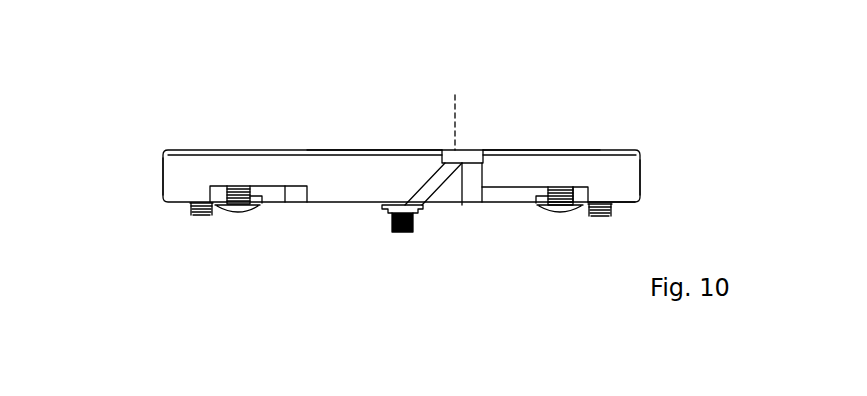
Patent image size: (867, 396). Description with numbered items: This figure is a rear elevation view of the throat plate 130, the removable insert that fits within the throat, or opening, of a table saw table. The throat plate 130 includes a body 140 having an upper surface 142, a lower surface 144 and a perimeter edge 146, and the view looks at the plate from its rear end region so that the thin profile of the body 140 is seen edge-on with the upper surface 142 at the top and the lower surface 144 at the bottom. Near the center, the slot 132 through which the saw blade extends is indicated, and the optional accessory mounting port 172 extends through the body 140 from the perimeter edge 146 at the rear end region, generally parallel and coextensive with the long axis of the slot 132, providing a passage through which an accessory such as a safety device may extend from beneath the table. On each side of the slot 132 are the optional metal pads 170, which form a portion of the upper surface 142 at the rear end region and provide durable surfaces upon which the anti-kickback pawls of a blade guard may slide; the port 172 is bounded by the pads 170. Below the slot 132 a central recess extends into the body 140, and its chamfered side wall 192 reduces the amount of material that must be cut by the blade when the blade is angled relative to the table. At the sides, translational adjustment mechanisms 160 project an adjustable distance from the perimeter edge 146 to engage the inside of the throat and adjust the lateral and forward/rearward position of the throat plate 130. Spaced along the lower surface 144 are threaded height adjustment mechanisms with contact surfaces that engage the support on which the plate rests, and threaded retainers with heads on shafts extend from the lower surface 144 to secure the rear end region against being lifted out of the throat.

The throat plate 130 is at (122, 93).
The slot 132 is at (455, 113).
The body 140 is at (643, 167).
The upper surface 142 is at (615, 152).
The lower surface 144 is at (627, 205).
The perimeter edge 146 is at (642, 180).
The translational adjustment mechanism 160 is at (162, 180).
The metal pad 170 is at (413, 151).
The accessory mounting port 172 is at (467, 150).
The chamfered side wall 192 is at (424, 189).